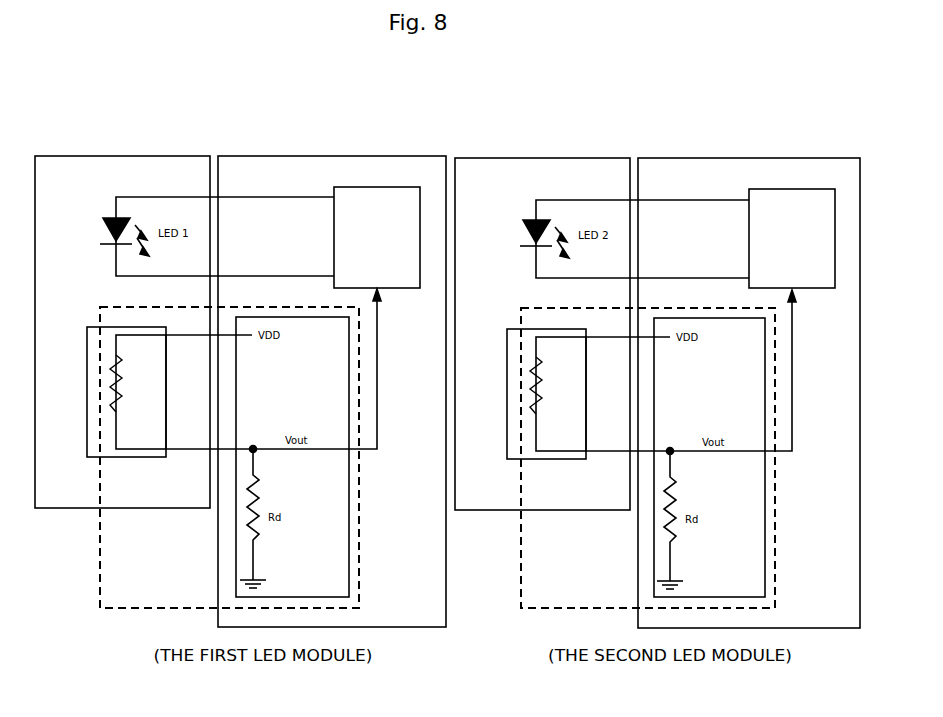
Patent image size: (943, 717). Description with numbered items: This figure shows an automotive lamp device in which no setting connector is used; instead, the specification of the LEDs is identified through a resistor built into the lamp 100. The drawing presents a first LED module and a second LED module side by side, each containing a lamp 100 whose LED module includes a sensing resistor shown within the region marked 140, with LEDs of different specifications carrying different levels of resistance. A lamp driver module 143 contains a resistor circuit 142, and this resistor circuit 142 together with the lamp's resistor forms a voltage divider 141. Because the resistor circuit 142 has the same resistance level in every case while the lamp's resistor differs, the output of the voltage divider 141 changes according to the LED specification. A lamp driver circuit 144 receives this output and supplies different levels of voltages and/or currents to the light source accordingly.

The lamp 100 is at (62, 158).
The sensor (sensing resistor Rs) 140 is at (127, 329).
The voltage divider 141 is at (230, 307).
The resistor circuit 142 is at (292, 318).
The lamp driver module 143 is at (370, 158).
The lamp driver circuit 144 is at (401, 189).